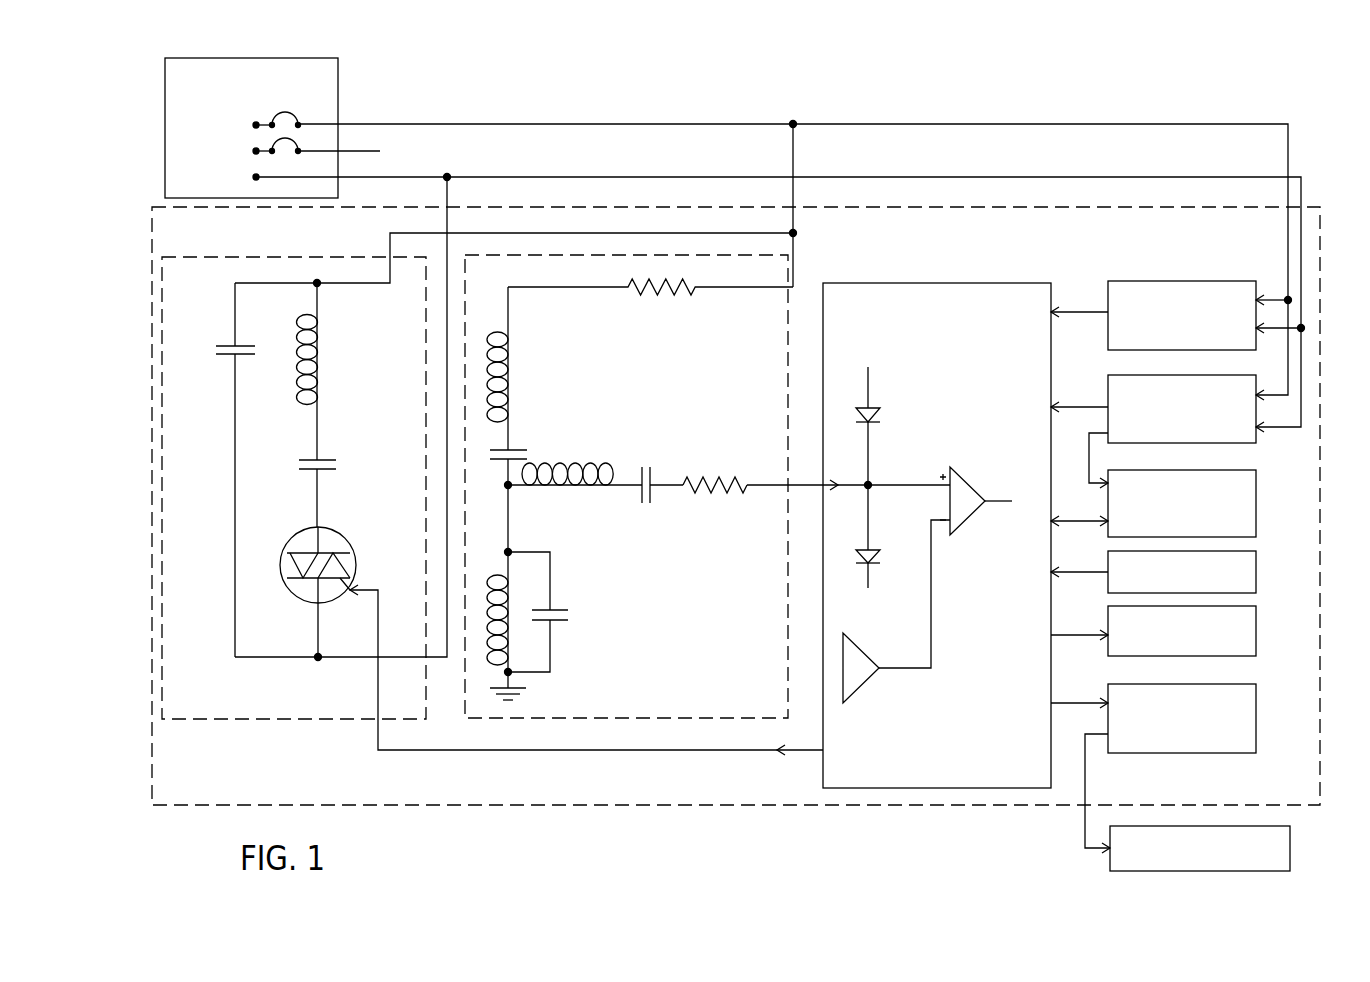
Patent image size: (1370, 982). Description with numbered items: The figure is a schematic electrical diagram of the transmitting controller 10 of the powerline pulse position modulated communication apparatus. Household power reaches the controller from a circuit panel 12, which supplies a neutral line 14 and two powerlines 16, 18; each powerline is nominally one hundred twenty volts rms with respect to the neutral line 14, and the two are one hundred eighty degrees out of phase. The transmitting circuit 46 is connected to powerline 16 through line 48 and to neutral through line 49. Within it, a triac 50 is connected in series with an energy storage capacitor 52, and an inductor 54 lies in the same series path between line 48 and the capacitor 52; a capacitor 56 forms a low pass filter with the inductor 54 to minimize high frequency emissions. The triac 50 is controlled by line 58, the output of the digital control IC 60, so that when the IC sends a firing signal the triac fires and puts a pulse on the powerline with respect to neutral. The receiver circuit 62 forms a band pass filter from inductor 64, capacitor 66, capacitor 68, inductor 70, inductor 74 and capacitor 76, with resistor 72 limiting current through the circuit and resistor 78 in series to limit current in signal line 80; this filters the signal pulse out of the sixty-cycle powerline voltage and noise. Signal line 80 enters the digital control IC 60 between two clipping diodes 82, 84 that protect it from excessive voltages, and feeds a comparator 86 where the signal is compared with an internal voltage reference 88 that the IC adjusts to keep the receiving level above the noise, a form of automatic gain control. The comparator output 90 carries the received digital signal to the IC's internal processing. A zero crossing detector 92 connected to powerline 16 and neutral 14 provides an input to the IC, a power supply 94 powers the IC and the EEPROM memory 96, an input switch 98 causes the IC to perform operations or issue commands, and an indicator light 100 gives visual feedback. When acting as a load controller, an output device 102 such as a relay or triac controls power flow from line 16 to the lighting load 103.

The transmitting controller 10 is at (465, 806).
The circuit panel 12 is at (330, 75).
The neutral line 14 is at (368, 177).
The powerline 16 is at (368, 124).
The powerline 18 is at (368, 152).
The transmitting circuit 46 is at (295, 720).
The line 48 is at (388, 247).
The line 49 is at (452, 202).
The triac 50 is at (340, 532).
The energy storage capacitor 52 is at (320, 467).
The inductor 54 is at (318, 340).
The capacitor 56 is at (222, 356).
The line 58 is at (378, 735).
The digital control integrated circuit 60 is at (920, 282).
The receiver circuit 62 is at (592, 720).
The inductor 64 is at (506, 342).
The capacitor 66 is at (517, 450).
The capacitor 68 is at (556, 622).
The inductor 70 is at (512, 640).
The resistor 72 is at (670, 290).
The inductor 74 is at (588, 463).
The capacitor 76 is at (653, 493).
The resistor 78 is at (710, 492).
The signal line 80 is at (796, 482).
The clipping diode 82 is at (872, 407).
The clipping diode 84 is at (873, 547).
The comparator 86 is at (968, 481).
The internal voltage reference 88 is at (872, 655).
The comparator output 90 is at (997, 497).
The zero crossing detector 92 is at (1107, 340).
The power supply 94 is at (1107, 387).
The EEPROM memory 96 is at (1257, 525).
The input switch 98 is at (1257, 583).
The indicator light 100 is at (1257, 623).
The output device 102 is at (1259, 713).
The lighting load 103 is at (1290, 851).